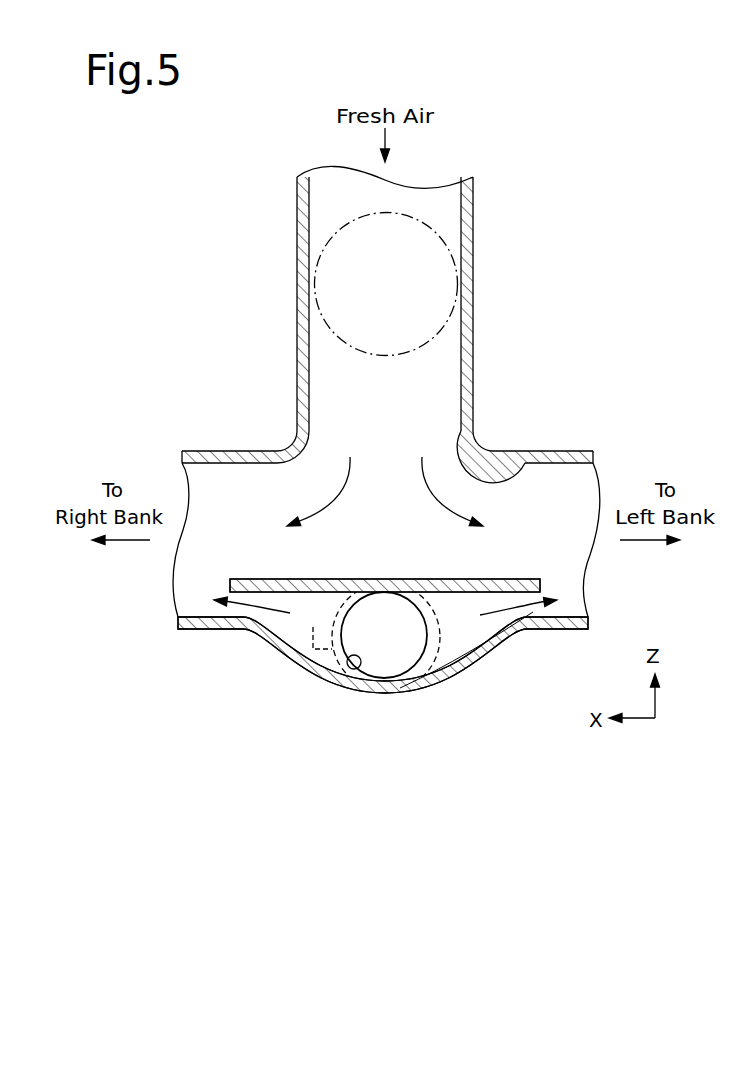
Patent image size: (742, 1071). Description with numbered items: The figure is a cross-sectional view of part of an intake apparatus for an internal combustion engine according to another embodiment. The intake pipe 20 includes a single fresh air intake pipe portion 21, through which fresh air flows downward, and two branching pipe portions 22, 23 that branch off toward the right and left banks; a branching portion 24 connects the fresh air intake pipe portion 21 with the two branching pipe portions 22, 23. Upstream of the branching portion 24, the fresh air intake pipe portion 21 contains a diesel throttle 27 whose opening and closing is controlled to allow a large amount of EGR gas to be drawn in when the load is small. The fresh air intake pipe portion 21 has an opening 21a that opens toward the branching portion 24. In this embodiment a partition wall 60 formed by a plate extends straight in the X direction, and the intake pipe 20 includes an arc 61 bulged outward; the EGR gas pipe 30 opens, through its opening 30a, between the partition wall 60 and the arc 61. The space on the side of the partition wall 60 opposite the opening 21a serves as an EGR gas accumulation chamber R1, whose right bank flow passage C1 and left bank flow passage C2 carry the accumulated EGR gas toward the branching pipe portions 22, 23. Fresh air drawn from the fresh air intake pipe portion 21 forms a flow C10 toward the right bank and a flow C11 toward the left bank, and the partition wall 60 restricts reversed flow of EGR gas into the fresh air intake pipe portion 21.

The intake pipe 20 is at (474, 210).
The fresh air intake pipe portion 21 is at (474, 287).
The opening of the fresh air intake pipe portion 21a is at (452, 450).
The branching pipe portion 22 is at (210, 450).
The branching pipe portion 23 is at (578, 450).
The branching portion 24 is at (291, 445).
The diesel throttle 27 is at (412, 214).
The EGR gas pipe 30 is at (362, 635).
The opening of the EGR gas pipe 30a is at (352, 670).
The partition wall 60 is at (522, 578).
The arc 61 is at (416, 692).
The right bank flow passage C1 is at (272, 618).
The left bank flow passage C2 is at (507, 616).
The flow C10 is at (350, 457).
The flow C11 is at (422, 457).
The EGR gas accumulation chamber R1 is at (465, 640).